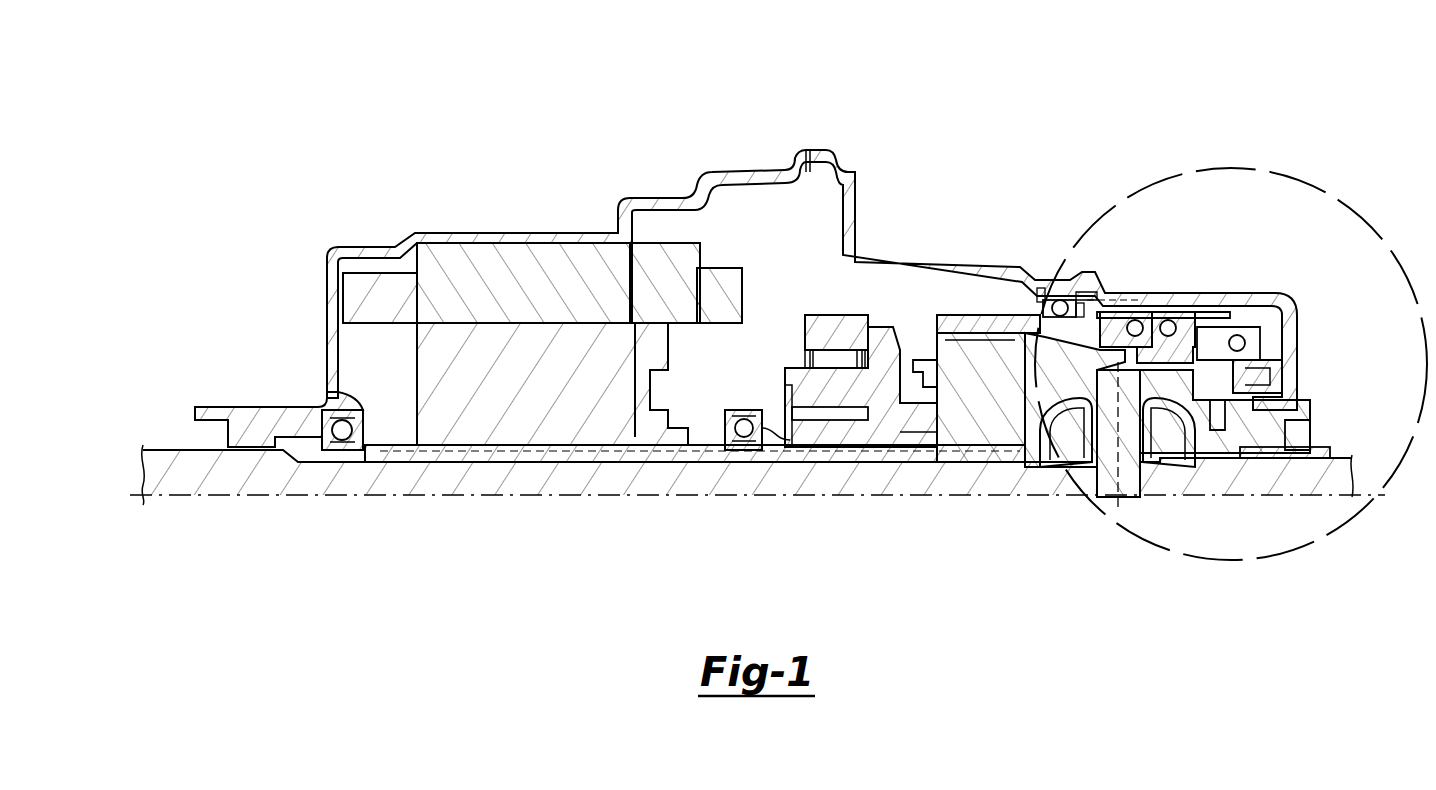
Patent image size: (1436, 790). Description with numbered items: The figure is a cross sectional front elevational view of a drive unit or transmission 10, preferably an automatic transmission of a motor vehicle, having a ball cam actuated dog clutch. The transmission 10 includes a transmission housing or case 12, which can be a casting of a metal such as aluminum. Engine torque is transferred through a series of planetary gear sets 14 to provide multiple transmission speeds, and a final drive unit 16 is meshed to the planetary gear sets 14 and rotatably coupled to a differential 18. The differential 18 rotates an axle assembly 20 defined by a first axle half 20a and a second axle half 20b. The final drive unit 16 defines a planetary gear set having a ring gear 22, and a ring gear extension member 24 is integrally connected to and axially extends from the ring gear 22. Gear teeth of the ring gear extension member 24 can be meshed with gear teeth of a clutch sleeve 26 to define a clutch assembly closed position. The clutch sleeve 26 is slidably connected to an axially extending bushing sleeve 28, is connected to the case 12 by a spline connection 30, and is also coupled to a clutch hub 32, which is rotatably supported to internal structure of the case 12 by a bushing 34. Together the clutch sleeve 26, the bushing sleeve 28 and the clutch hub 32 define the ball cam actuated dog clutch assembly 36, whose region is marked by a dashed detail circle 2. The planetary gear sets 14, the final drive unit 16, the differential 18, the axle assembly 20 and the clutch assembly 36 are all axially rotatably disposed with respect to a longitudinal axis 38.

The detail circle (FIG. 2 region) 2 is at (1262, 170).
The transmission 10 is at (1088, 97).
The transmission housing or case 12 is at (886, 262).
The planetary gear sets 14 is at (855, 298).
The final drive unit 16 is at (955, 311).
The differential 18 is at (1130, 496).
The axle assembly 20 is at (990, 497).
The first axle half 20a is at (932, 488).
The second axle half 20b is at (1276, 486).
The ring gear 22 is at (996, 323).
The ring gear extension member 24 is at (1165, 320).
The clutch sleeve 26 is at (1222, 290).
The bushing sleeve 28 is at (1185, 318).
The spline connection 30 is at (1104, 305).
The clutch hub 32 is at (1272, 352).
The bushing 34 is at (1262, 405).
The ball cam actuated dog clutch assembly 36 is at (1299, 296).
The longitudinal axis 38 is at (385, 497).